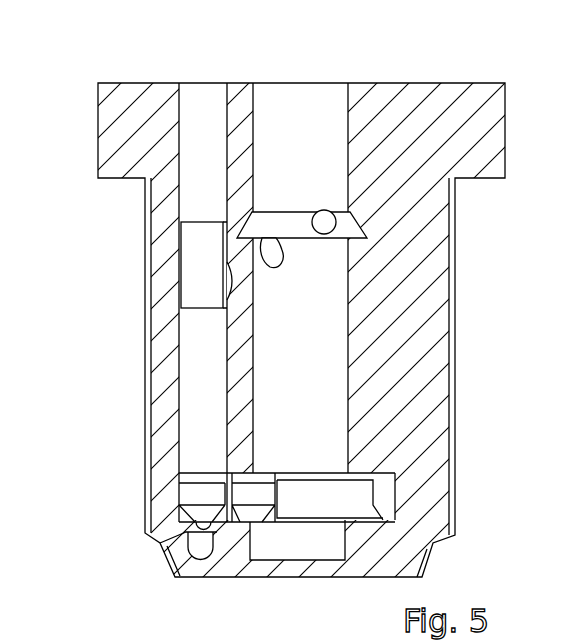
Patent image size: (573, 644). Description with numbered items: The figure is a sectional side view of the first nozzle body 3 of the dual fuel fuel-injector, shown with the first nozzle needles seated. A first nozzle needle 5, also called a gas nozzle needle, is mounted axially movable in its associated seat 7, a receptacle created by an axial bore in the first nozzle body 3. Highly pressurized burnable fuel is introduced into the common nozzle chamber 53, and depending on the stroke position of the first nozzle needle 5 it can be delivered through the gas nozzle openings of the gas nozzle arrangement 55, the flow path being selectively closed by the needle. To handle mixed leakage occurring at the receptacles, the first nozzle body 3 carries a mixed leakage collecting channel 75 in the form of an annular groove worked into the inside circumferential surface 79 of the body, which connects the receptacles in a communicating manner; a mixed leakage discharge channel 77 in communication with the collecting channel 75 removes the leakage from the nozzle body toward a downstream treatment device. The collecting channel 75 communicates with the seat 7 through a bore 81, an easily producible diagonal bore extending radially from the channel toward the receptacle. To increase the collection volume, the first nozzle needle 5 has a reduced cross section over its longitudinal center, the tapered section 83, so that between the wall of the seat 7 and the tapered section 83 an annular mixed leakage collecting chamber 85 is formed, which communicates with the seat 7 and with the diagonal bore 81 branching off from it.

The first nozzle body 3 is at (152, 103).
The first nozzle needle 5 is at (210, 113).
The seat 7 is at (180, 365).
The nozzle chamber 53 is at (345, 498).
The gas nozzle arrangement 55 is at (178, 550).
The mixed leakage collecting channel 75 is at (290, 220).
The mixed leakage discharge channel 77 is at (330, 228).
The inside circumferential surface 79 is at (318, 353).
The bore 81 is at (273, 267).
The tapered section 83 is at (190, 272).
The mixed leakage collecting chamber 85 is at (180, 285).